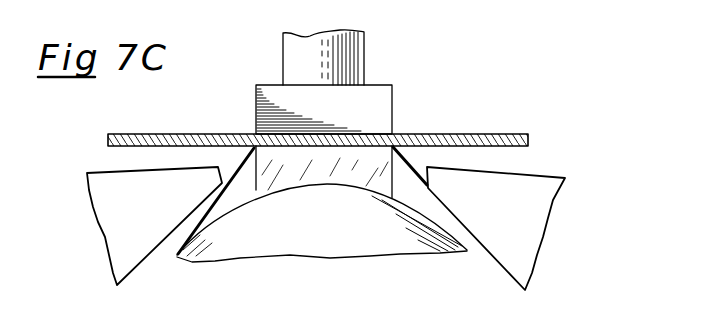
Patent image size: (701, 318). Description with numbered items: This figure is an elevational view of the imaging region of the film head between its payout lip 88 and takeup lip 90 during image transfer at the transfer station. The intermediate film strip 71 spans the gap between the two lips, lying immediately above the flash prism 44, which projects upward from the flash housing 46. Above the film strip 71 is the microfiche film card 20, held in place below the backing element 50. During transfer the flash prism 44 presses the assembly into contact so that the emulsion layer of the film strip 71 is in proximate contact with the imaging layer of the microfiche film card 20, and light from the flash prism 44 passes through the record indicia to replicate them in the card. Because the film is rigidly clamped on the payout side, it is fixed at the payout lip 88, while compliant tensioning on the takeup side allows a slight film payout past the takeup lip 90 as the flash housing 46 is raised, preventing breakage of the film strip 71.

The microfiche film card 20 is at (438, 134).
The backing element 50 is at (392, 96).
The intermediate film strip 71 is at (413, 155).
The flash prism 44 is at (273, 184).
The flash housing 46 is at (352, 254).
The takeup lip 90 is at (158, 247).
The payout lip 88 is at (465, 234).